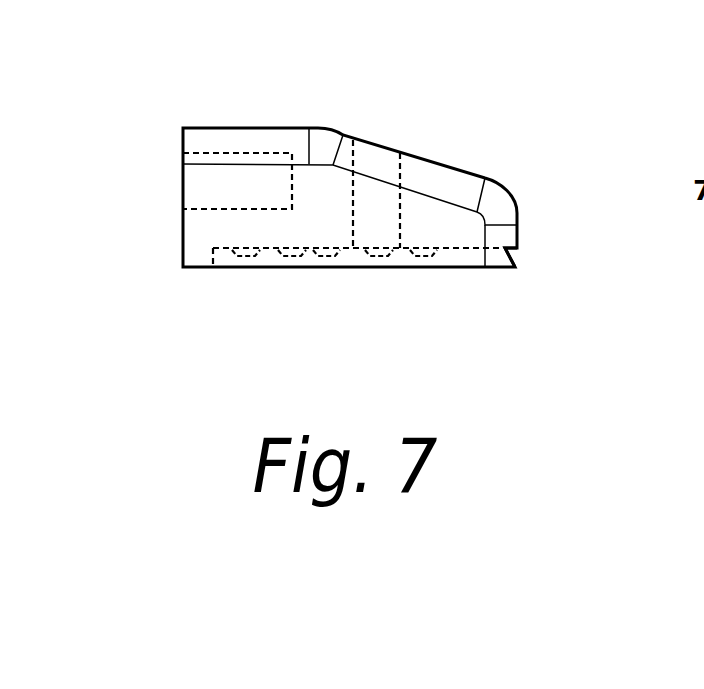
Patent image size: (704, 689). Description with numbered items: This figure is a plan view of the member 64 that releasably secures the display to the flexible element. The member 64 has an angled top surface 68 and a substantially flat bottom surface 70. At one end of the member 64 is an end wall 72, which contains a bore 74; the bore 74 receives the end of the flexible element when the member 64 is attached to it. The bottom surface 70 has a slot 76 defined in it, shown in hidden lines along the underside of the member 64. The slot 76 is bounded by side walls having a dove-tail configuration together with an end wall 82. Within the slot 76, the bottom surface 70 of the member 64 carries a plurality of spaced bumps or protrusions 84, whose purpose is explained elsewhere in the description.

The member 64 is at (480, 143).
The angled top surface 68 is at (350, 137).
The bottom surface 70 is at (465, 268).
The end wall 72 is at (183, 235).
The bore 74 is at (183, 167).
The slot 76 is at (521, 255).
The end wall 82 is at (212, 263).
The spaced bumps/protrusions 84 is at (380, 260).